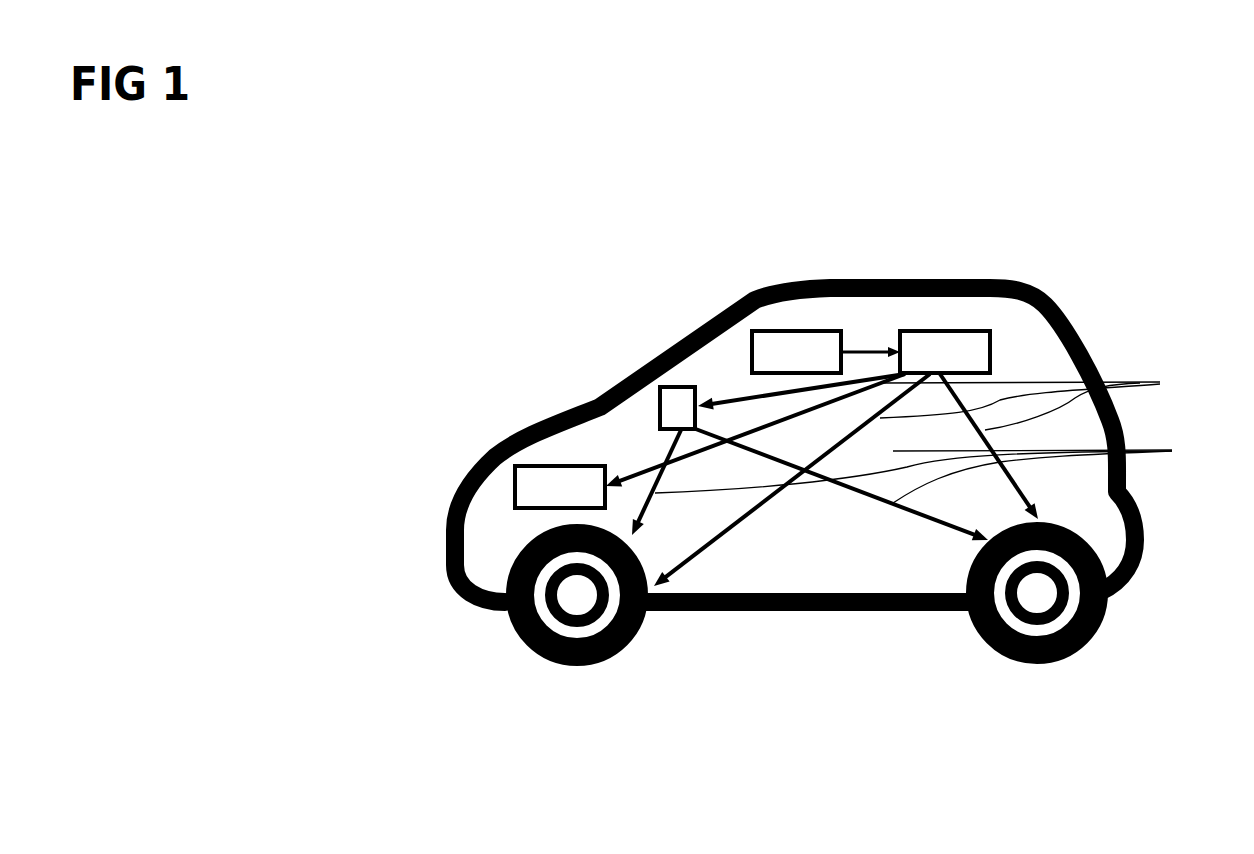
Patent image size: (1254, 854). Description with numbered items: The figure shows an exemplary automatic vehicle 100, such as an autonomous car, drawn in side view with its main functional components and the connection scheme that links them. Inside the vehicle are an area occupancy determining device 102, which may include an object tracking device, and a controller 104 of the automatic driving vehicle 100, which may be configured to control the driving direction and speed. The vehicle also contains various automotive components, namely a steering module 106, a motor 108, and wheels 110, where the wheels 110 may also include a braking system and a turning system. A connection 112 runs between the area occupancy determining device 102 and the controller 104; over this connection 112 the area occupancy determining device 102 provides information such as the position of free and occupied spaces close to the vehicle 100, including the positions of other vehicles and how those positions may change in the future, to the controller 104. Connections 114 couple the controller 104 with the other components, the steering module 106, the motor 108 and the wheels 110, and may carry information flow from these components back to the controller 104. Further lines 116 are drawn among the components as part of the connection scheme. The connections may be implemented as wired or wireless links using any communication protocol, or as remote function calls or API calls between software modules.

The automatic vehicle 100 is at (795, 283).
The area occupancy determining device 102 is at (788, 331).
The controller 104 is at (950, 331).
The steering module 106 is at (678, 387).
The motor 108 is at (560, 466).
The wheels 110 is at (580, 653).
The connection 112 is at (871, 348).
The connections 114 is at (1051, 397).
The second signal lines 116 is at (943, 468).